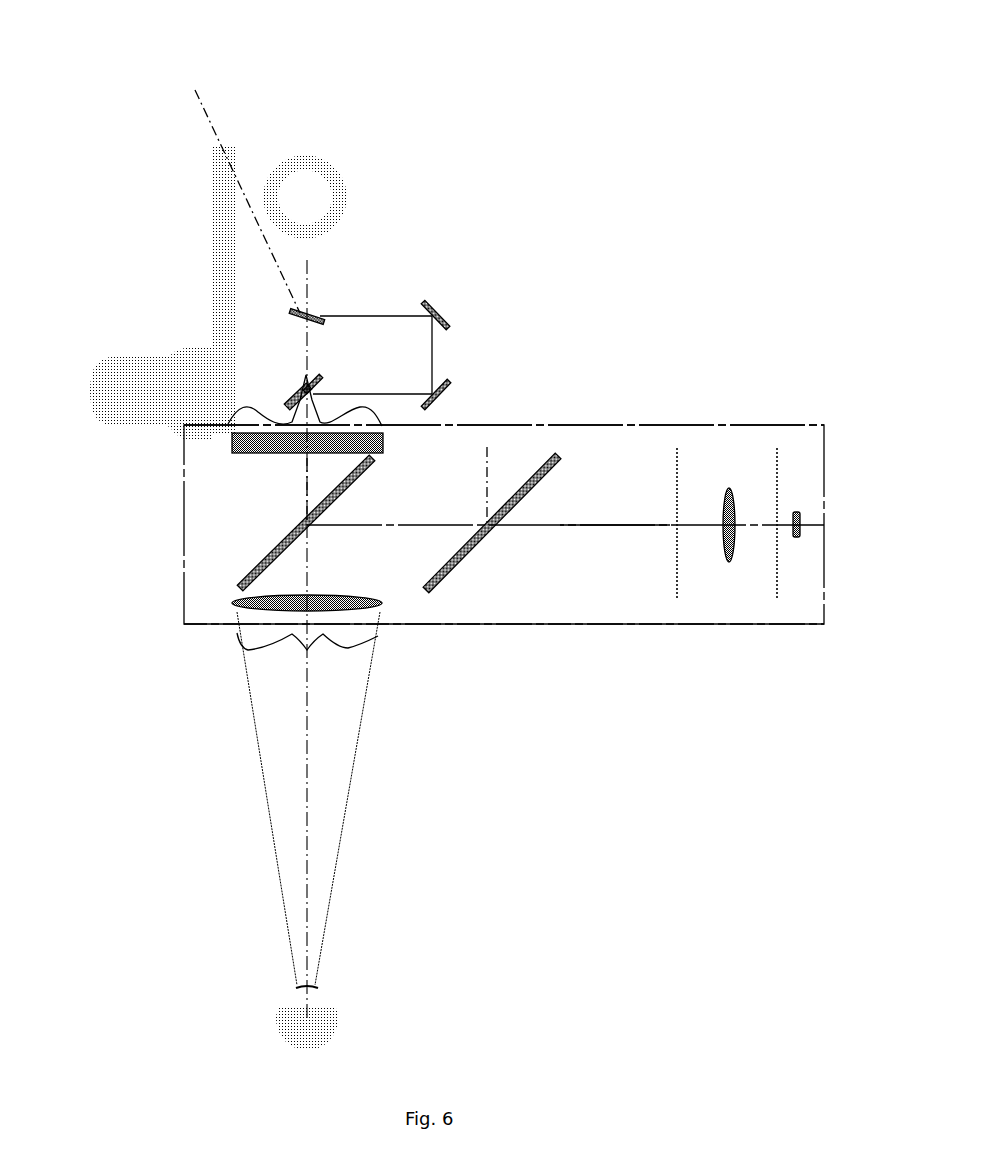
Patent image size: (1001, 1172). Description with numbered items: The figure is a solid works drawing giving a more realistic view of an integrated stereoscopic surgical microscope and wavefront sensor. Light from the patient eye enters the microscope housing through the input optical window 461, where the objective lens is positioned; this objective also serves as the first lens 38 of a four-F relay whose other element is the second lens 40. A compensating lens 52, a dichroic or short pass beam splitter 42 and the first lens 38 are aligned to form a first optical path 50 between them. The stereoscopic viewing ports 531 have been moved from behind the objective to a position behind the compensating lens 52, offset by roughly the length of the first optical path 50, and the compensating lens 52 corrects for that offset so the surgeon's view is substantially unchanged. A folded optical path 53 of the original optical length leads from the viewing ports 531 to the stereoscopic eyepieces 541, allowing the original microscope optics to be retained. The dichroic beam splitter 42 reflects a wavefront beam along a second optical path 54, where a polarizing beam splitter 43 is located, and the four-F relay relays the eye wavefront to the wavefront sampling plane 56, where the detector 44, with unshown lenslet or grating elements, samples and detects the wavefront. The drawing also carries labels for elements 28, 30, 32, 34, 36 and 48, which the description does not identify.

The surgical microscope 28 is at (467, 248).
The wavefront sensor module 30 is at (697, 412).
The module housing top 32 is at (606, 424).
The module housing bottom 34 is at (487, 624).
The free space between optics 36 is at (629, 468).
The first lens 38 is at (228, 603).
The second lens 40 is at (728, 486).
The dichroic or short pass beam splitter 42 is at (273, 550).
The polarizing beam splitter 43 is at (523, 482).
The detector 44 is at (800, 510).
The aberrated wavefront 48 is at (296, 418).
The first optical path 50 is at (300, 485).
The compensating lens 52 is at (226, 443).
The folded optical path 53 is at (373, 316).
The stereoscopic viewing ports 531 is at (297, 383).
The stereoscopic eyepieces 541 is at (165, 110).
The second optical path 54 is at (610, 525).
The wavefront sampling plane 56 is at (777, 598).
The input optical window 461 is at (247, 650).